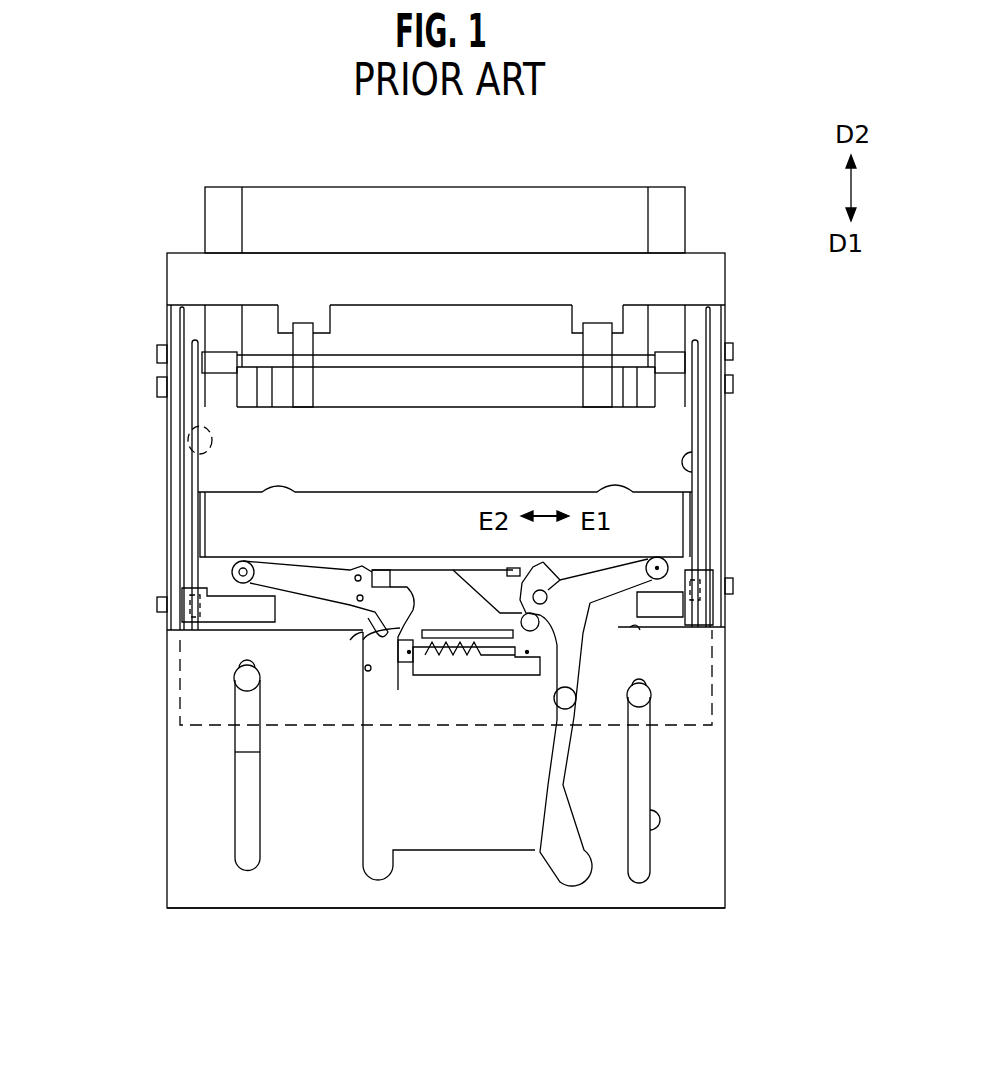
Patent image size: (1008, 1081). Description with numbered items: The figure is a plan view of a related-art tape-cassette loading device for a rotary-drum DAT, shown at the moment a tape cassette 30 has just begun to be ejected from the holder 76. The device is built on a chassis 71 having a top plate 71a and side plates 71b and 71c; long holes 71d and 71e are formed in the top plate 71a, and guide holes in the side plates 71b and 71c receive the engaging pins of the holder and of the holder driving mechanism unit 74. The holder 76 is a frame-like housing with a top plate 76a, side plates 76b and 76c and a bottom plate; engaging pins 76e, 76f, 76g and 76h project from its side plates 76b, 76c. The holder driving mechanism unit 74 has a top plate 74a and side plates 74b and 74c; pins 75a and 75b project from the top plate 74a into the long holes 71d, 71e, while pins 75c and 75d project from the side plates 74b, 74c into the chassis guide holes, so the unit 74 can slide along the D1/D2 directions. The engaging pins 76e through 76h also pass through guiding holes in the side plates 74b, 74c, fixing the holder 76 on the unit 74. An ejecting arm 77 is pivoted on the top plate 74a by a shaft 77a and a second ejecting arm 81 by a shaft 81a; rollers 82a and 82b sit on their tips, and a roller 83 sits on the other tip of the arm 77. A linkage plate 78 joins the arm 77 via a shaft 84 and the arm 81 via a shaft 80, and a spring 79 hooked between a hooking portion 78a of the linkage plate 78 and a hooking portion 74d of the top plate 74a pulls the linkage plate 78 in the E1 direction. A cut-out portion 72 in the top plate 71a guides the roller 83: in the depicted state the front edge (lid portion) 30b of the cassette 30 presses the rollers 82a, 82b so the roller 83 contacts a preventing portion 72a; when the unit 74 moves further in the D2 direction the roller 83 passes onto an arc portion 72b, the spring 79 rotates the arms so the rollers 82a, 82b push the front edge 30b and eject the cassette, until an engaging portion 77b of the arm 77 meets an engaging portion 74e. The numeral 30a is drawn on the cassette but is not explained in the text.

The tape cassette 30 is at (372, 231).
The side portion of upper unit 30a is at (257, 210).
The front end (lid portion) of the tape cassette 30b is at (290, 545).
The chassis 71 is at (687, 745).
The top plate of the chassis 71a is at (715, 870).
The side plate of the chassis 71b is at (727, 550).
The side plate of the chassis 71c is at (167, 512).
The long hole 71d is at (727, 870).
The long hole 71e is at (235, 753).
The cut-out portion 72 is at (540, 852).
The preventing portion 72a is at (652, 820).
The arc portion 72b is at (640, 630).
The holder driving mechanism unit 74 is at (480, 714).
The top plate of the holder driving mechanism unit 74a is at (432, 728).
The side plate of the holder driving mechanism unit 74b is at (710, 330).
The side plate of the holder driving mechanism unit 74c is at (182, 330).
The hooking portion of the top plate 74d is at (540, 677).
The engaging portion 74e is at (512, 565).
The pin 75a is at (651, 695).
The pin 75b is at (235, 680).
The engaging pin 75c is at (733, 350).
The engaging pin 75d is at (157, 352).
The holder 76 is at (670, 424).
The top plate of the holder 76a is at (445, 460).
The side plate of the holder 76b is at (692, 462).
The side plate of the holder 76c is at (190, 437).
The engaging pin 76e is at (733, 384).
The engaging pin 76f is at (735, 585).
The engaging pin 76g is at (157, 385).
The engaging pin 76h is at (157, 612).
The ejecting arm 77 is at (668, 562).
The shaft 77a is at (522, 597).
The engaging portion of the ejecting arm 77b is at (585, 558).
The linkage plate 78 is at (405, 574).
The hooking portion of the linkage plate 78a is at (368, 670).
The spring 79 is at (462, 677).
The shaft 80 is at (358, 572).
The ejecting arm 81 is at (268, 562).
The shaft 81a is at (355, 640).
The roller 82a is at (715, 623).
The roller 82b is at (182, 588).
The roller 83 is at (565, 710).
The shaft 84 is at (586, 634).